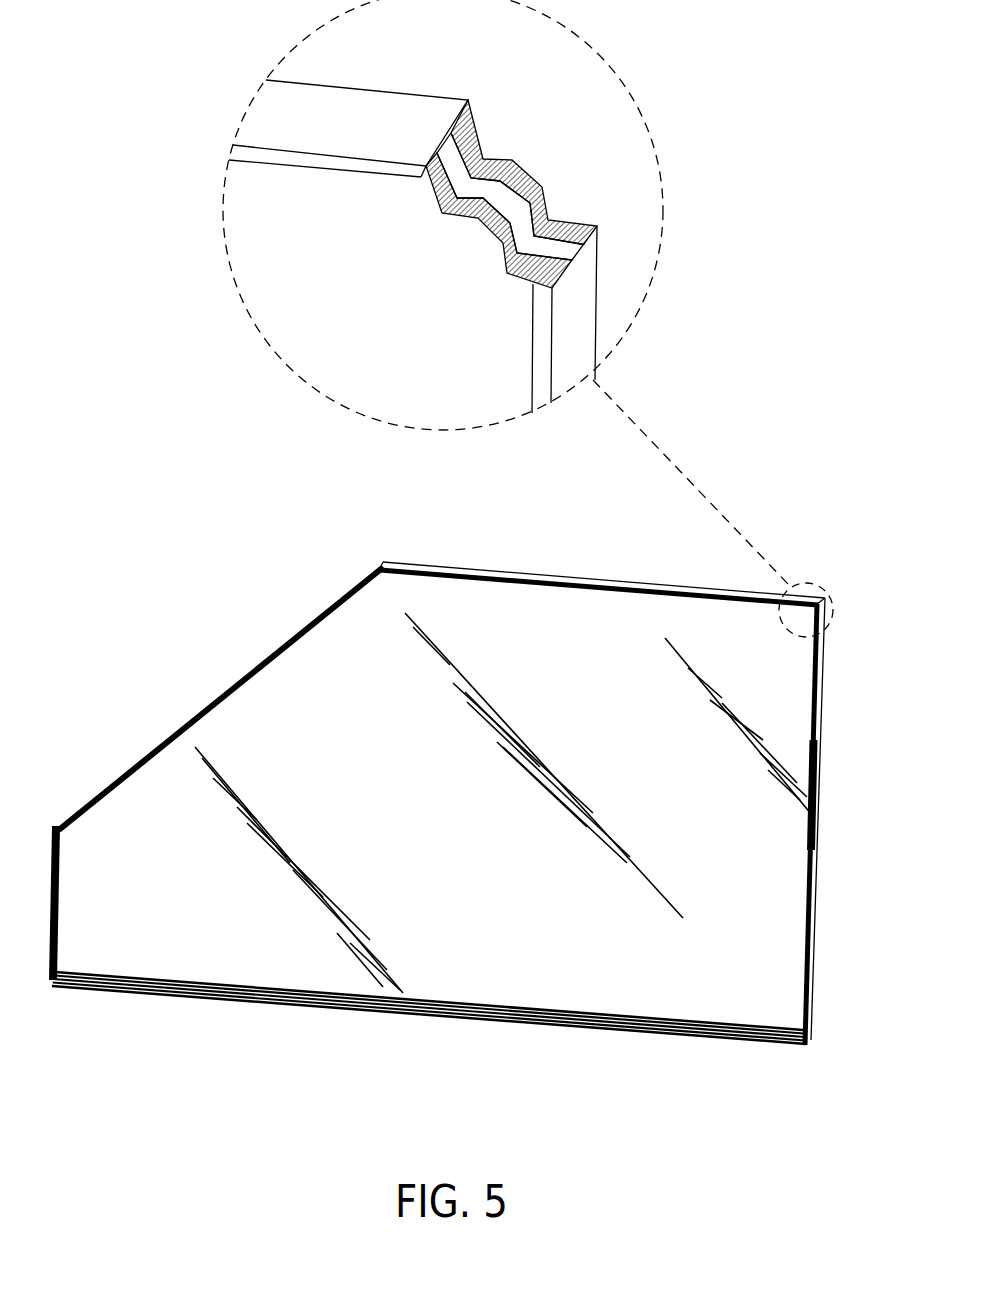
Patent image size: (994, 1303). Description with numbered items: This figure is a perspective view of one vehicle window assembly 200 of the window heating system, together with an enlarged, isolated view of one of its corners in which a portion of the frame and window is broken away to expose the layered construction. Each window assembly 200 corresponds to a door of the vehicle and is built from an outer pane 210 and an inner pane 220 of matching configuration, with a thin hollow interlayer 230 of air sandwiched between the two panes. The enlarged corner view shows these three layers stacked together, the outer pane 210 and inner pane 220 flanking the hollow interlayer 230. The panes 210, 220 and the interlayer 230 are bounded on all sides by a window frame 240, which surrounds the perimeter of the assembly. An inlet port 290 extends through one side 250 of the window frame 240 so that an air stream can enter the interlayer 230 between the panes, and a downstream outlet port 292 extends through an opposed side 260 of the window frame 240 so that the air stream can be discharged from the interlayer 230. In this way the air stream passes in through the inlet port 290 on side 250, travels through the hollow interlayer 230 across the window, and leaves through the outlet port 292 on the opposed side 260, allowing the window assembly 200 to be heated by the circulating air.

The vehicle window assembly 200 is at (260, 562).
The outer pane 210 is at (488, 218).
The inner pane 220 is at (485, 153).
The hollow interlayer 230 is at (508, 205).
The window frame 240 is at (500, 575).
The one side of the window frame 250 is at (122, 757).
The opposed side of the window frame 260 is at (812, 888).
The inlet port 290 is at (232, 688).
The outlet port 292 is at (822, 773).